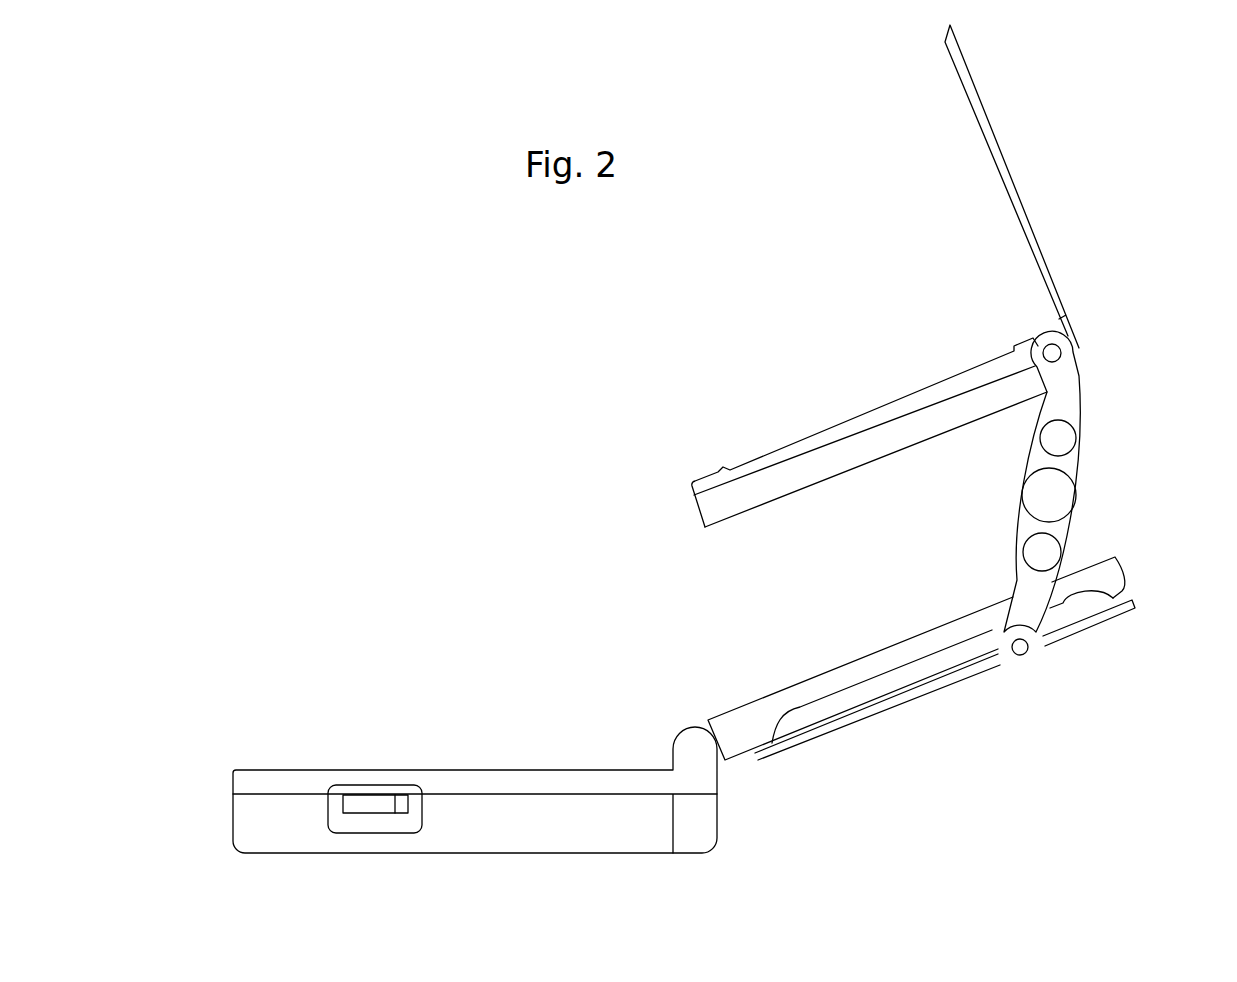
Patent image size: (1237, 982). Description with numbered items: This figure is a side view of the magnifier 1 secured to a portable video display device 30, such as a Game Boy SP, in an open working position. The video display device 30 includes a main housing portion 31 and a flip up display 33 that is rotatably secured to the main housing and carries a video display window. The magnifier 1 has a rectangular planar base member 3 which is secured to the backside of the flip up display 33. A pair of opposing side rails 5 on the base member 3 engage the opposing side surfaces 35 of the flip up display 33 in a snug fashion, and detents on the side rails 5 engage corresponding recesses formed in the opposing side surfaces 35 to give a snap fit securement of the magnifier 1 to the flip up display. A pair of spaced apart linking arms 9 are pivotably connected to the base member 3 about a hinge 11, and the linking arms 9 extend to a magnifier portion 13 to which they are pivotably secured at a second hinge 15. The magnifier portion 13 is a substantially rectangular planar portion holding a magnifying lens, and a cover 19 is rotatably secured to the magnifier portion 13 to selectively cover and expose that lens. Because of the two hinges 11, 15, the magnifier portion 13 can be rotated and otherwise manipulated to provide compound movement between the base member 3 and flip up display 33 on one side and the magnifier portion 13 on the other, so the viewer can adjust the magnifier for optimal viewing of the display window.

The magnifier 1 is at (1158, 401).
The base member 3 is at (1136, 607).
The side rails 5 is at (807, 721).
The linking arms 9 is at (1078, 466).
The hinge 11 is at (1024, 648).
The magnifier portion 13 is at (664, 474).
The hinge 15 is at (1056, 353).
The cover 19 is at (1012, 188).
The video display device 30 is at (374, 714).
The main housing portion 31 is at (240, 808).
The flip up display 33 is at (858, 660).
The opposing side surfaces 35 is at (1115, 572).